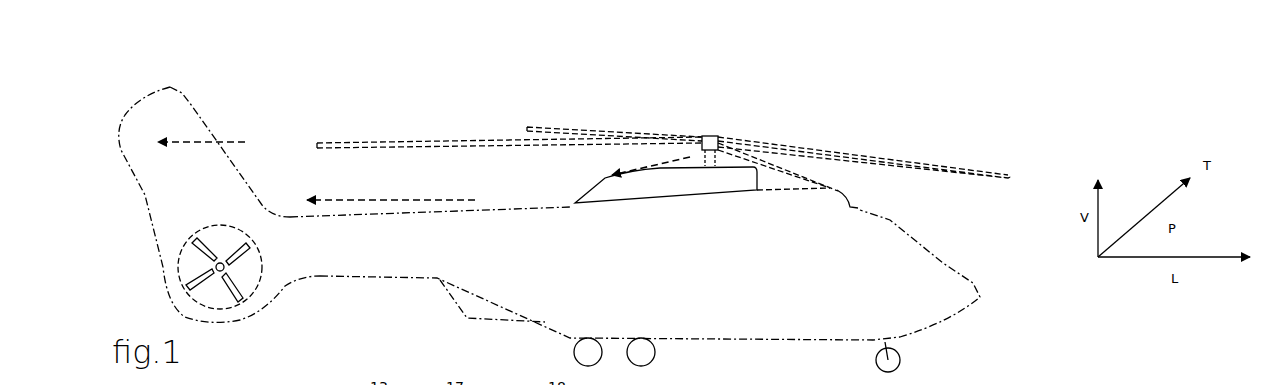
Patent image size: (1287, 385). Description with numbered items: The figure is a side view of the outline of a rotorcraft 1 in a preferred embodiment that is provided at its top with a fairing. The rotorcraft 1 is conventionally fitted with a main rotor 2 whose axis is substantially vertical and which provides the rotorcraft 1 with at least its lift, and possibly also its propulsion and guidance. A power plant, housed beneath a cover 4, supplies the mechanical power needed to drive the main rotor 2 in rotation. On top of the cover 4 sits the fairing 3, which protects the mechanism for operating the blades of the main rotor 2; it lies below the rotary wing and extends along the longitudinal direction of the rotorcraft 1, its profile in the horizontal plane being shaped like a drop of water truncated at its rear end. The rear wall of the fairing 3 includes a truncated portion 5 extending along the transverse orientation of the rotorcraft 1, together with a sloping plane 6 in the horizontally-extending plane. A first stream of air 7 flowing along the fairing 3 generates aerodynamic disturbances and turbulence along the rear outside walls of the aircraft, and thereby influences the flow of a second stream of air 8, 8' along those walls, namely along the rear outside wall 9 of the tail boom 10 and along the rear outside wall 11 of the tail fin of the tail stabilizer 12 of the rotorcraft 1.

The rotorcraft 1 is at (578, 221).
The main rotor 2 is at (777, 122).
The fairing 3 is at (666, 207).
The cover 4 is at (723, 183).
The truncated portion 5 is at (572, 201).
The sloping plane 6 is at (594, 185).
The first stream of air 7 is at (651, 161).
The second stream of air 8 is at (201, 133).
The second stream of air 8' is at (391, 190).
The rear outside wall of the tail boom 9 is at (381, 246).
The tail boom 10 is at (357, 278).
The rear outside wall of the tail fin 11 is at (219, 244).
The tail stabilizer 12 is at (190, 105).